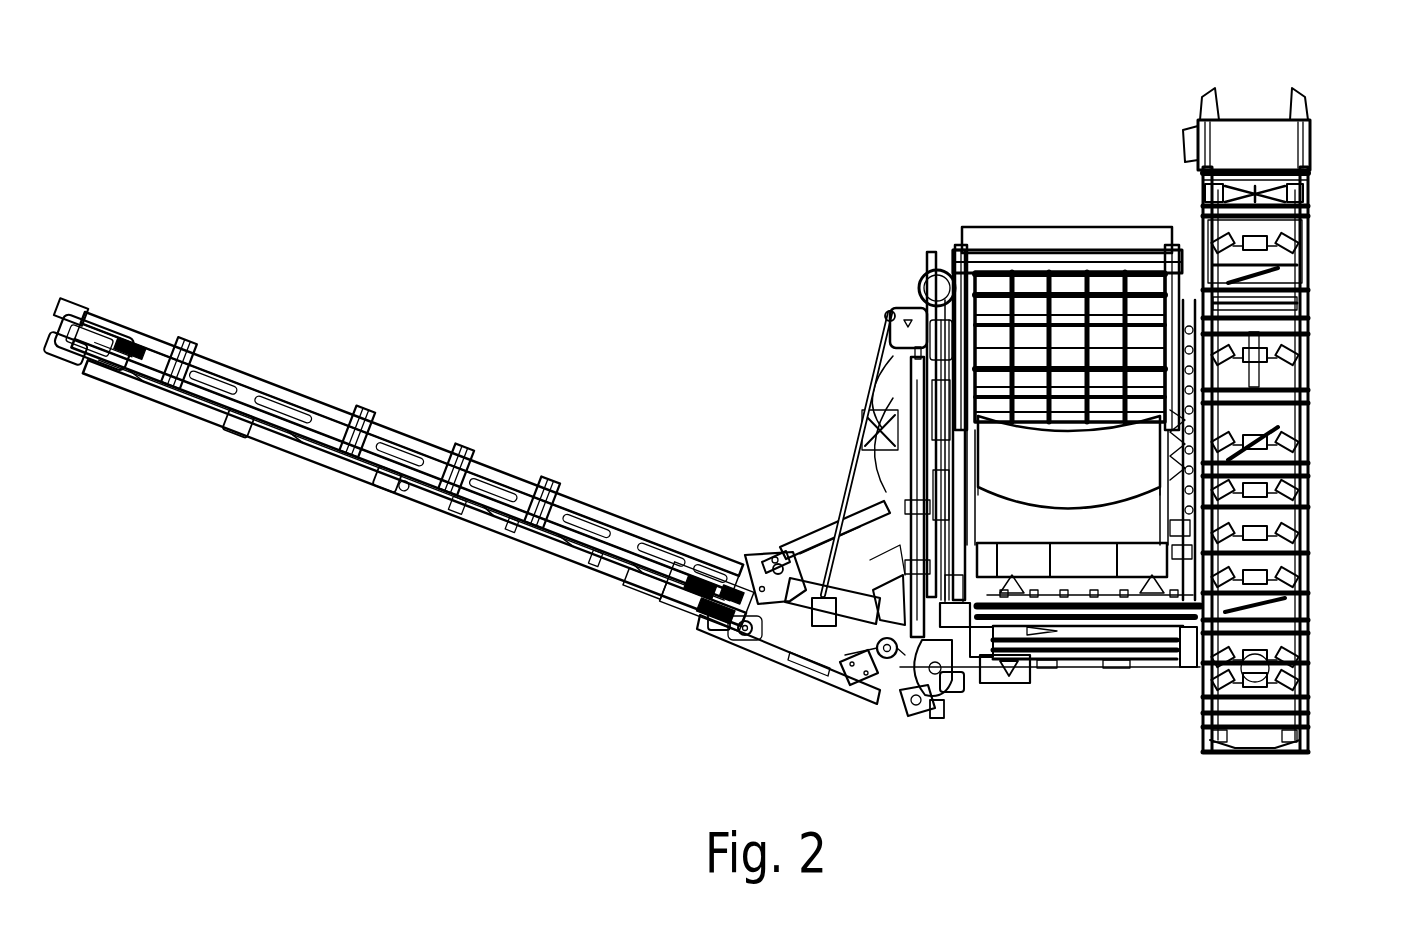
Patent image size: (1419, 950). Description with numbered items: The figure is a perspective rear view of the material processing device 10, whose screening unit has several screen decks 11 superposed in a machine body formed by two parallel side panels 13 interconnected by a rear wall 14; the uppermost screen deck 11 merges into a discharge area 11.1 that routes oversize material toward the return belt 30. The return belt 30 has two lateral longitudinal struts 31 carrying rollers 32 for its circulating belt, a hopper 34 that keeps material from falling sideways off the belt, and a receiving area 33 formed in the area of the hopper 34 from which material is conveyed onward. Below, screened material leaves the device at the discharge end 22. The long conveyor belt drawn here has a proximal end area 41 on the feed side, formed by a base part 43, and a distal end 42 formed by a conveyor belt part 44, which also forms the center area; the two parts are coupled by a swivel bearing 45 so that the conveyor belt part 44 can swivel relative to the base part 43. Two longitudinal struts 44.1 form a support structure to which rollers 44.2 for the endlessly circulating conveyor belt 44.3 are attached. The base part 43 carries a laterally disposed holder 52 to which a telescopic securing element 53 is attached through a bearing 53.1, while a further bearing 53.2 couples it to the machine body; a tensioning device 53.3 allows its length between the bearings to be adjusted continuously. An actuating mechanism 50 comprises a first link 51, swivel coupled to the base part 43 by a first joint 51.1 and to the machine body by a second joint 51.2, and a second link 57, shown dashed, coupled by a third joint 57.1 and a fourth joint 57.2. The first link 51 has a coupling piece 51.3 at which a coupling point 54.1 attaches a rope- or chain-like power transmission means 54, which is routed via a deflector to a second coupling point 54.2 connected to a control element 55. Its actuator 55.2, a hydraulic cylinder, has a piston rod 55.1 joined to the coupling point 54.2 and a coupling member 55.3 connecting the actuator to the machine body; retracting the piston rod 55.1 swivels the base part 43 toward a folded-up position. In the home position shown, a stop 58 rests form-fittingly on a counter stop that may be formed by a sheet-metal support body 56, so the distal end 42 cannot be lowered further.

The material processing device 10 is at (1052, 210).
The screen decks 11 is at (1300, 272).
The discharge area 11.1 is at (1300, 537).
The side panels 13 is at (960, 240).
The rear wall 14 is at (1068, 268).
The discharge end 22 is at (1035, 232).
The return belt 30 is at (1316, 192).
The longitudinal struts 31 is at (1285, 403).
The rollers 32 is at (1305, 348).
The receiving area 33 is at (1308, 697).
The hopper 34 is at (1290, 142).
The proximal end area 41 is at (878, 680).
The distal end 42 is at (100, 360).
The base part 43 is at (757, 651).
The conveyor belt part 44 is at (320, 474).
The struts 44.1 is at (402, 450).
The rollers 44.2 is at (352, 420).
The conveyor belt 44.3 is at (500, 472).
The swivel bearing 45 is at (722, 624).
The actuating mechanism 50 is at (790, 532).
The first link 51 is at (777, 662).
The first joint 51.1 is at (760, 632).
The second joint 51.2 is at (958, 685).
The coupling piece 51.3 is at (820, 648).
The holder 52 is at (777, 583).
The securing element 53 is at (817, 507).
The bearing 53.1 is at (772, 558).
The further bearing 53.2 is at (872, 432).
The tensioning device 53.3 is at (878, 403).
The power transmission means 54 is at (850, 478).
The coupling point 54.1 is at (832, 632).
The second coupling point 54.2 is at (888, 350).
The control element 55 is at (950, 547).
The piston rod 55.1 is at (888, 373).
The actuator 55.2 is at (955, 560).
The coupling member 55.3 is at (948, 703).
The support body 56 is at (665, 562).
The second link 57 is at (938, 663).
The third joint 57.1 is at (910, 700).
The fourth joint 57.2 is at (990, 680).
The stop 58 is at (886, 690).